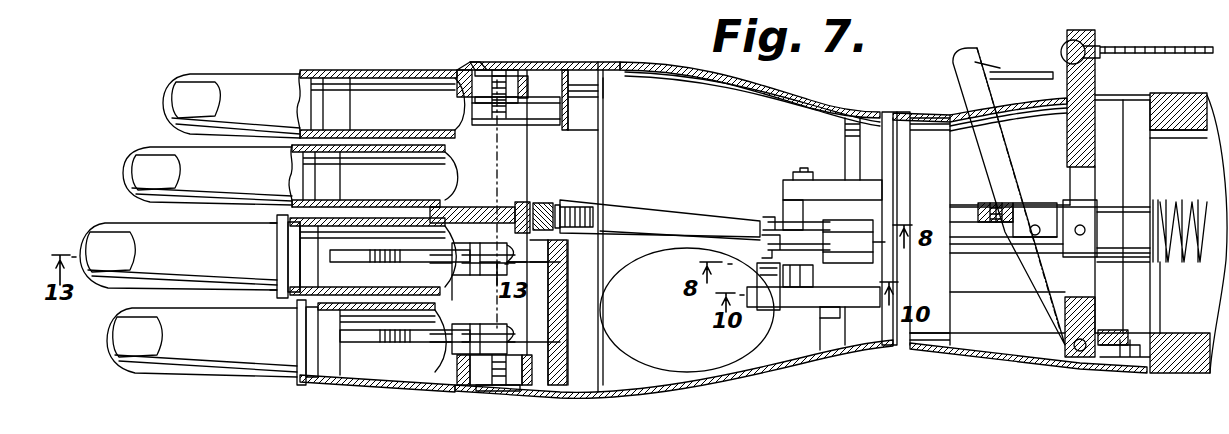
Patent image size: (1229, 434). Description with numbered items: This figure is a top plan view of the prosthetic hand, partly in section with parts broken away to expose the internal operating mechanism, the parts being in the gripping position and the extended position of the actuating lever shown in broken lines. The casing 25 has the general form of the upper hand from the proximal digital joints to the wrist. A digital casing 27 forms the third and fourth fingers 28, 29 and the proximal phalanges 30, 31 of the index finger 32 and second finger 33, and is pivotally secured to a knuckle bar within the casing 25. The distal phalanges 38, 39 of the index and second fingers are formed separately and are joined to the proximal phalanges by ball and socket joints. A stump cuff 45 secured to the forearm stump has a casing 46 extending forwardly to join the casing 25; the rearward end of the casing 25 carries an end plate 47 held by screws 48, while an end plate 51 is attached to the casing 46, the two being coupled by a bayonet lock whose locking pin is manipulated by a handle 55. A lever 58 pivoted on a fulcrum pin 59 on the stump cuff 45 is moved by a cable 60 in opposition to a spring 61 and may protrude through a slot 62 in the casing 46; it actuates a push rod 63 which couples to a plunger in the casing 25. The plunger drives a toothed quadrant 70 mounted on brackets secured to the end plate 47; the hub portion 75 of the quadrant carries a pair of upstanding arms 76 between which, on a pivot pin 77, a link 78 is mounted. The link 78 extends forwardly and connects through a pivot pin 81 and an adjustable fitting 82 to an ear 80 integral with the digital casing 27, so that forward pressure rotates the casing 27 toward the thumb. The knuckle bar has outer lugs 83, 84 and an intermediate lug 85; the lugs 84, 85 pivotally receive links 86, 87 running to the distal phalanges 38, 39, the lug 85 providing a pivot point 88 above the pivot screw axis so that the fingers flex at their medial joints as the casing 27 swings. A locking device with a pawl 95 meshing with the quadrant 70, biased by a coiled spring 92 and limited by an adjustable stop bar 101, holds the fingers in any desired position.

The casing 25 is at (638, 58).
The digital casing 27 is at (447, 68).
The third finger 28 is at (381, 158).
The fourth finger 29 is at (372, 86).
The proximal phalanx of the index finger 30 is at (353, 383).
The proximal phalanx of the second finger 31 is at (341, 289).
The index finger 32 is at (387, 368).
The second finger 33 is at (370, 242).
The distal phalanx of the index finger 38 is at (133, 234).
The distal phalanx of the second finger 39 is at (203, 363).
The stump cuff 45 is at (1187, 374).
The casing 46 is at (1028, 360).
The end plate 47 is at (897, 157).
The screws 48 is at (888, 112).
The end plate 51 is at (940, 298).
The handle 55 is at (810, 433).
The lever 58 is at (1095, 78).
The fulcrum pin 59 is at (1082, 352).
The cable 60 is at (1186, 47).
The spring 61 is at (1178, 204).
The slot 62 is at (1030, 108).
The push rod 63 is at (1055, 210).
The toothed quadrant 70 is at (846, 246).
The hub portion 75 is at (783, 208).
The upstanding arms 76 is at (770, 224).
The pivot pin 77 is at (780, 248).
The link 78 is at (672, 213).
The ear 80 is at (476, 208).
The pivot pin 81 is at (532, 206).
The adjustable fitting 82 is at (558, 208).
The outer lug 83 is at (480, 122).
The outer lug 84 is at (488, 330).
The intermediate lug 85 is at (484, 246).
The link 86 is at (400, 342).
The link 87 is at (413, 262).
The pivot point 88 is at (470, 270).
The coiled spring 92 is at (805, 304).
The pawl 95 is at (838, 320).
The stop bar 101 is at (770, 282).